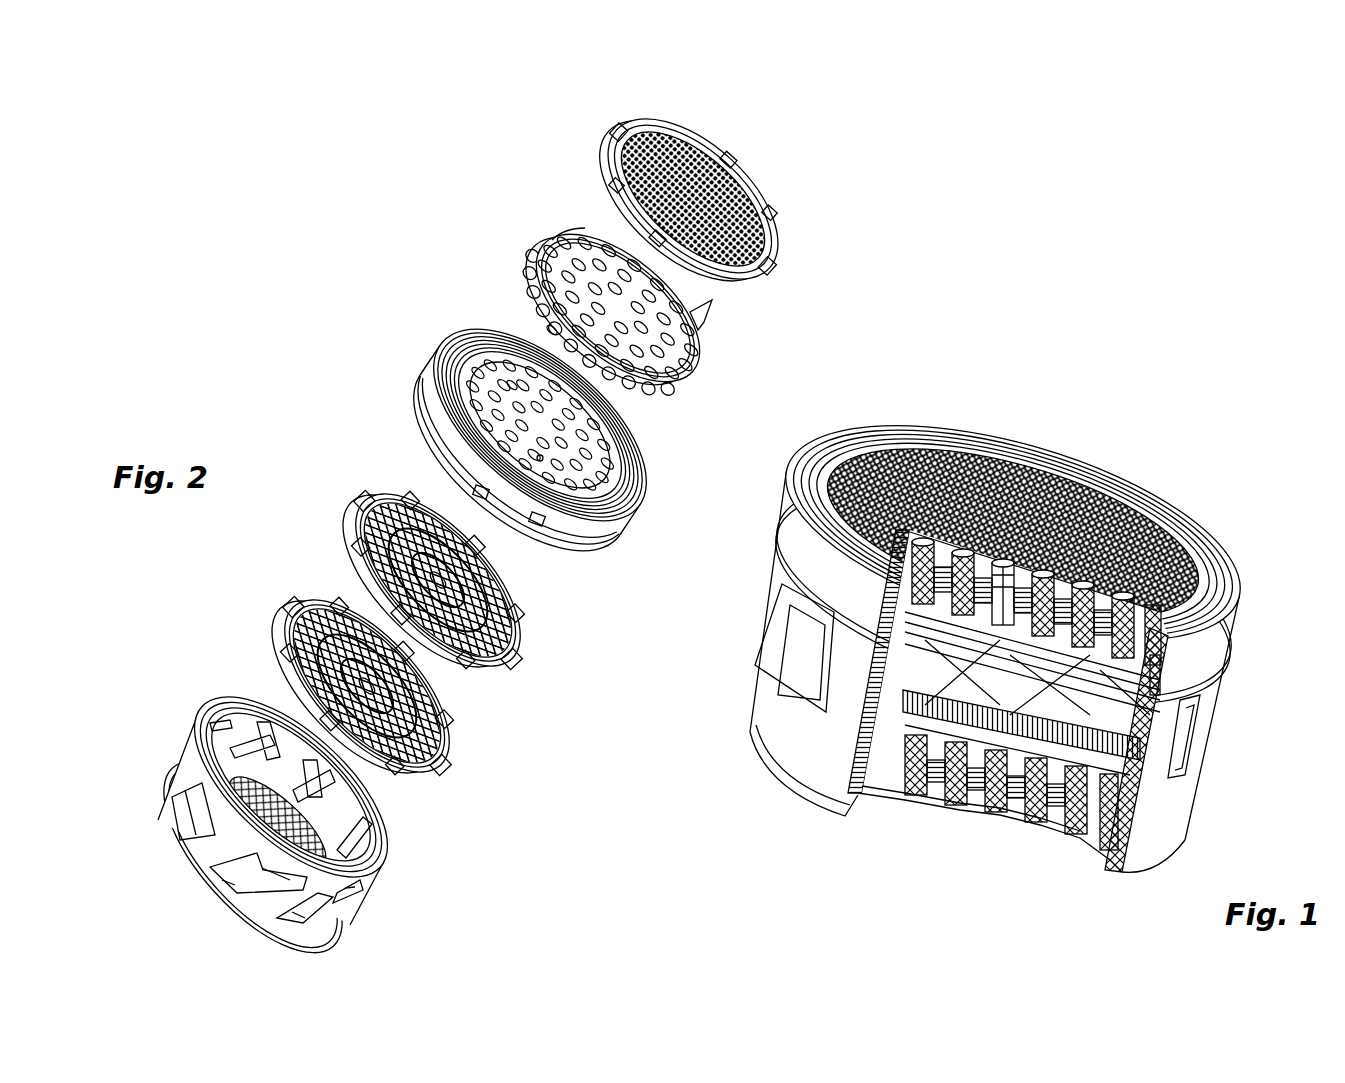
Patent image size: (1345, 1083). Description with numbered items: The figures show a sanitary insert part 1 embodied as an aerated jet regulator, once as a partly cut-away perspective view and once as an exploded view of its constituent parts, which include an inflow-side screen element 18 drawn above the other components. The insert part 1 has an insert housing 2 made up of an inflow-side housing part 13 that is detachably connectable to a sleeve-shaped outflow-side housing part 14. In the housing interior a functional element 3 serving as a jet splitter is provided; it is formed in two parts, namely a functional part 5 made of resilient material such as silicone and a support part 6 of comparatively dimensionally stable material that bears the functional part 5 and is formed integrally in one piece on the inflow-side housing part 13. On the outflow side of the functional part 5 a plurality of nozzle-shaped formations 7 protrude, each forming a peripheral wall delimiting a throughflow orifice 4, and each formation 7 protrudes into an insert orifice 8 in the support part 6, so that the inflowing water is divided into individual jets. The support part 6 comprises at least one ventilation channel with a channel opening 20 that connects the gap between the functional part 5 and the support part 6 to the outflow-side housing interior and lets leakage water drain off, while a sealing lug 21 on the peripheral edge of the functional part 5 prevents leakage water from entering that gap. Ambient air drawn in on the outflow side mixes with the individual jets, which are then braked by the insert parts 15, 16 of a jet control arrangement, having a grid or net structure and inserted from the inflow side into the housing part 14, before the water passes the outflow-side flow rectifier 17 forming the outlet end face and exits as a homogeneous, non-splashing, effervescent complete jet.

In FIG. 2, the sanitary insert part 1 is at (388, 256).
In FIG. 1, the sanitary insert part 1 is at (1063, 390).
In FIG. 2, the insert housing 2 is at (605, 512).
In FIG. 1, the insert housing 2 is at (1022, 606).
In FIG. 2, the functional element 3 is at (700, 395).
In FIG. 1, the functional element 3 is at (1103, 587).
In FIG. 2, the throughflow orifice 4 is at (702, 318).
In FIG. 1, the throughflow orifice 4 is at (1053, 533).
In FIG. 2, the functional part 5 is at (600, 256).
In FIG. 1, the functional part 5 is at (985, 600).
In FIG. 2, the support part 6 is at (578, 467).
In FIG. 1, the support part 6 is at (1010, 590).
In FIG. 2, the nozzle-shaped formation 7 is at (560, 320).
In FIG. 1, the nozzle-shaped formation 7 is at (1157, 658).
In FIG. 2, the insert orifice 8 is at (511, 380).
In FIG. 2, the inflow-side housing part 13 is at (525, 430).
In FIG. 1, the inflow-side housing part 13 is at (842, 570).
In FIG. 2, the outflow-side housing part 14 is at (378, 882).
In FIG. 1, the outflow-side housing part 14 is at (1167, 757).
In FIG. 2, the insert part of the jet control arrangement 15 is at (525, 616).
In FIG. 1, the insert part of the jet control arrangement 15 is at (985, 700).
In FIG. 2, the insert part of the jet control arrangement 16 is at (452, 712).
In FIG. 1, the insert part of the jet control arrangement 16 is at (873, 737).
In FIG. 1, the flow rectifier 17 is at (930, 803).
In FIG. 2, the inflow screen 18 is at (745, 162).
In FIG. 1, the inflow screen 18 is at (916, 440).
In FIG. 2, the channel opening 20 is at (540, 462).
In FIG. 1, the channel opening 20 is at (1025, 600).
In FIG. 2, the sealing lug 21 is at (553, 238).
In FIG. 1, the sealing lug 21 is at (900, 587).